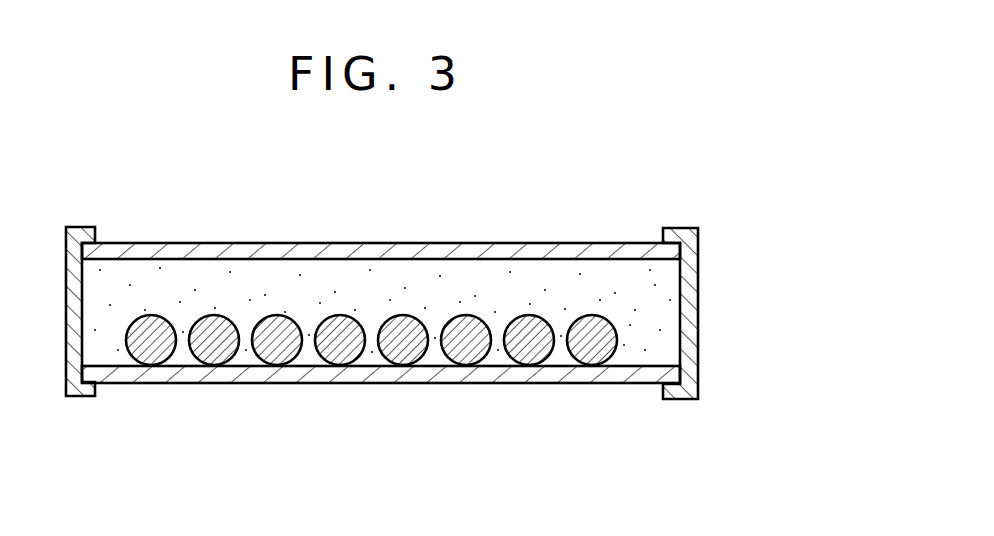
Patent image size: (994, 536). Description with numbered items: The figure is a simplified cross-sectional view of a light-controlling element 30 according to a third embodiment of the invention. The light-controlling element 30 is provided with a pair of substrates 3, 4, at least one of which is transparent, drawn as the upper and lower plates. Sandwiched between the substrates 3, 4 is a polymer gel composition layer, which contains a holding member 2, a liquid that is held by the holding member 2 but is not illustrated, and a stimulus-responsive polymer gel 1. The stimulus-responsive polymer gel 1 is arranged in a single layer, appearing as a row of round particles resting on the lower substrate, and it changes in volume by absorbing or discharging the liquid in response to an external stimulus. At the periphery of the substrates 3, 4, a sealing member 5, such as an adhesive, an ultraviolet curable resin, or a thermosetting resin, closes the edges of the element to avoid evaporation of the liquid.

The stimulus-responsive polymer gel 1 is at (342, 357).
The holding member 2 is at (424, 272).
The substrate 3 is at (498, 384).
The substrate 4 is at (617, 240).
The sealing member 5 is at (699, 323).
The light-controlling element 30 is at (716, 218).